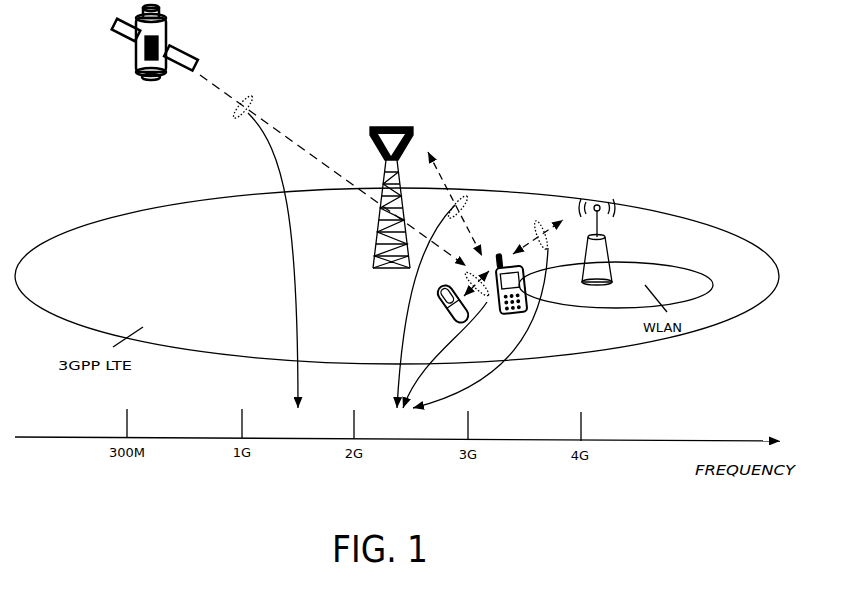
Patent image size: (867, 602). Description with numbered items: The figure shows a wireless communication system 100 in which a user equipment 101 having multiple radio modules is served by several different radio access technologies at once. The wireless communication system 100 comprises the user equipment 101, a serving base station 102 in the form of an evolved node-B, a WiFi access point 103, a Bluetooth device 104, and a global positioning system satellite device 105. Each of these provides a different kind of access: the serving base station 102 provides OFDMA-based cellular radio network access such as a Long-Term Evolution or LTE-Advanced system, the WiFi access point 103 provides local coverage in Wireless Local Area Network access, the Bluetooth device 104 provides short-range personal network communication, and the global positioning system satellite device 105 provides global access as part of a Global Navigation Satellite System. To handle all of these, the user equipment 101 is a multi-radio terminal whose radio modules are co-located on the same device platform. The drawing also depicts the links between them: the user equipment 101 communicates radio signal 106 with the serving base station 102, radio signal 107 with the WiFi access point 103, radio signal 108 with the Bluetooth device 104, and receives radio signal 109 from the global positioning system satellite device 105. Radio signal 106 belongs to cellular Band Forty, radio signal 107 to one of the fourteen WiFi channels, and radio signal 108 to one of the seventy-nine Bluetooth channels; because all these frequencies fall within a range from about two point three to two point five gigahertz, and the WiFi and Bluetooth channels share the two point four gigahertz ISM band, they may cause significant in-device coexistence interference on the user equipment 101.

The wireless communication system 100 is at (727, 40).
The user equipment 101 is at (503, 316).
The serving base station 102 is at (392, 127).
The WiFi access point 103 is at (597, 204).
The Bluetooth device 104 is at (444, 309).
The global positioning system satellite device 105 is at (150, 81).
The radio signal 106 is at (466, 197).
The radio signal 107 is at (537, 222).
The radio signal 108 is at (464, 282).
The radio signal 109 is at (250, 96).